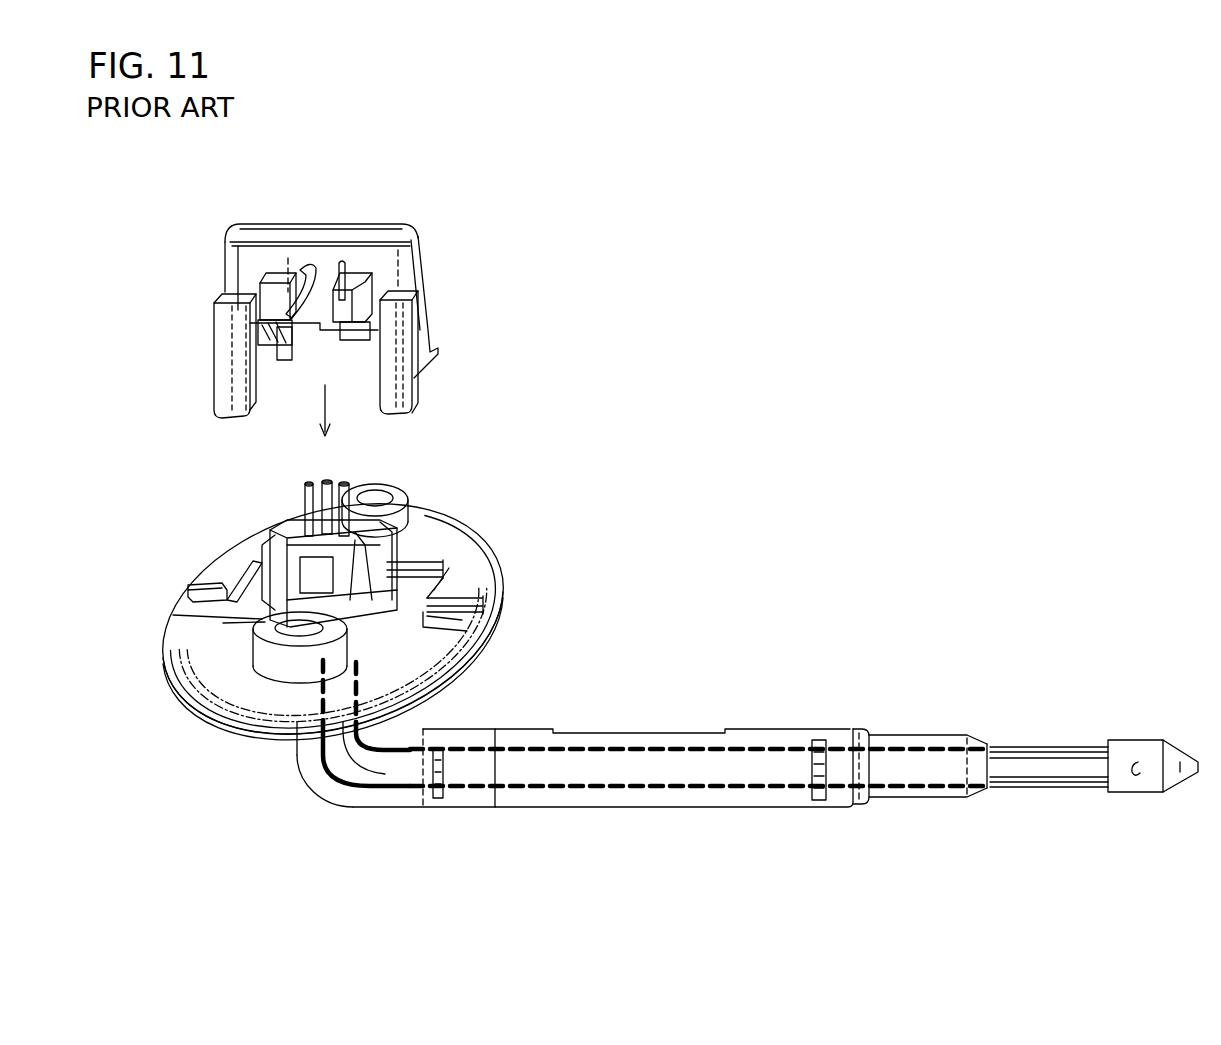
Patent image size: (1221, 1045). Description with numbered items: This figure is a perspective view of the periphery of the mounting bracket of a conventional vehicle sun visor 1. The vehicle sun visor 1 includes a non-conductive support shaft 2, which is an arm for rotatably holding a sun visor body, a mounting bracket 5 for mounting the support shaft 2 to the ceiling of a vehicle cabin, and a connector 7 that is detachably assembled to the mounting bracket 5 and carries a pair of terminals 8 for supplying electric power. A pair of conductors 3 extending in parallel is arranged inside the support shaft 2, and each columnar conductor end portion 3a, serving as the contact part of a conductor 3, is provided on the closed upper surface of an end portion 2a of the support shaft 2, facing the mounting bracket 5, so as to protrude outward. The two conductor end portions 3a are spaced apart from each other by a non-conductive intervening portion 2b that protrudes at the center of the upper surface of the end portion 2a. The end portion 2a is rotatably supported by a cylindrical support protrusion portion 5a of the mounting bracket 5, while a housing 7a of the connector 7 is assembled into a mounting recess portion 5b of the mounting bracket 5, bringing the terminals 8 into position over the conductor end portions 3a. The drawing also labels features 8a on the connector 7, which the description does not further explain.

The vehicle sun visor 1 is at (637, 486).
The support shaft 2 is at (507, 810).
The end portion 2a is at (355, 532).
The intervening portion 2b is at (325, 480).
The conductors 3 is at (672, 737).
The conductor end portions 3a is at (306, 482).
The mounting bracket 5 is at (496, 554).
The support protrusion portion 5a is at (378, 618).
The mounting recess portion 5b is at (200, 611).
The connector 7 is at (429, 289).
The housing 7a is at (224, 270).
The terminals 8 is at (301, 311).
The spring contact pieces 8a is at (299, 270).